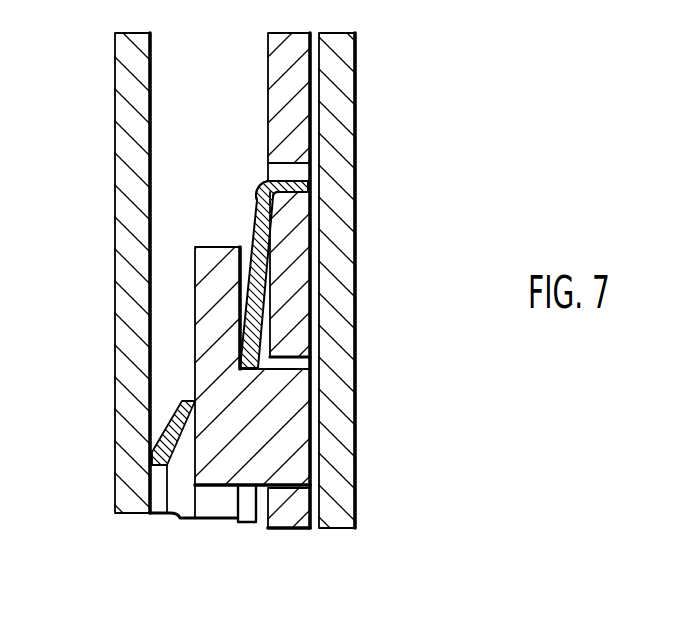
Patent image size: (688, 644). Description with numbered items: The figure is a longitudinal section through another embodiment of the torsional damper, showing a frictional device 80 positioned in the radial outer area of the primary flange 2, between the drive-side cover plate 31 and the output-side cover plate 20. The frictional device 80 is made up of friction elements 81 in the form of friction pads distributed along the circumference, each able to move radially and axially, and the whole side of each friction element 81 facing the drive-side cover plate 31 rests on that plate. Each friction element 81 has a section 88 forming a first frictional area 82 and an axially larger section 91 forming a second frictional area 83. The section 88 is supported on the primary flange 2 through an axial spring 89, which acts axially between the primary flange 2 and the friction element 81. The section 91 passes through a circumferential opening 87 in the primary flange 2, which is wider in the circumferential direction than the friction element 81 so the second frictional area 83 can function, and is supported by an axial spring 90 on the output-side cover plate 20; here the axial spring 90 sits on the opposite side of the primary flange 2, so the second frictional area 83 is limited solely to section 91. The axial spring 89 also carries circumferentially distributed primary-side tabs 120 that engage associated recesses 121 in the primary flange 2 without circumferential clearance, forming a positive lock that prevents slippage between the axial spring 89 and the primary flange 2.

The primary flange 2 is at (286, 66).
The output-side cover plate 20 is at (347, 92).
The drive-side cover plate 31 is at (130, 93).
The frictional device 80 is at (189, 214).
The friction element 81 is at (243, 471).
The first frictional area 82 is at (270, 331).
The second frictional area 83 is at (194, 318).
The circumferential opening 87 is at (282, 363).
The section 88 is at (204, 292).
The axial spring 89 is at (270, 263).
The axial spring 90 is at (168, 438).
The section 91 is at (275, 458).
The primary-side tab 120 is at (318, 165).
The recess 121 is at (292, 205).